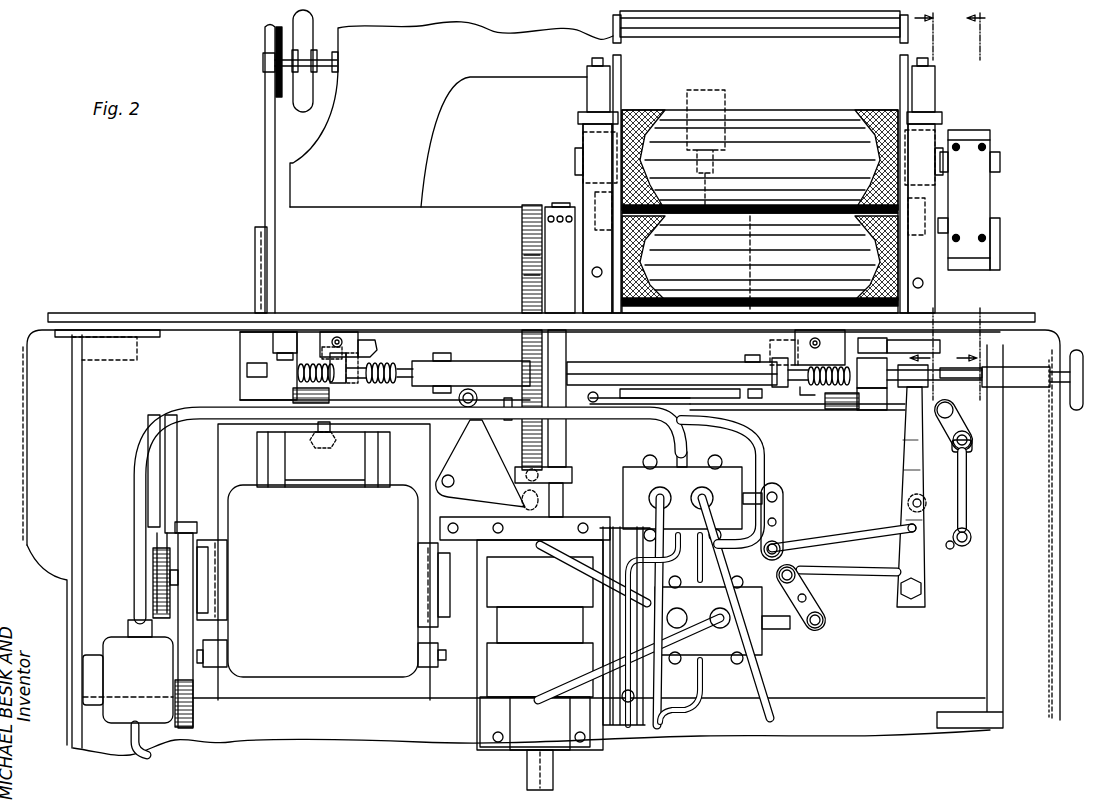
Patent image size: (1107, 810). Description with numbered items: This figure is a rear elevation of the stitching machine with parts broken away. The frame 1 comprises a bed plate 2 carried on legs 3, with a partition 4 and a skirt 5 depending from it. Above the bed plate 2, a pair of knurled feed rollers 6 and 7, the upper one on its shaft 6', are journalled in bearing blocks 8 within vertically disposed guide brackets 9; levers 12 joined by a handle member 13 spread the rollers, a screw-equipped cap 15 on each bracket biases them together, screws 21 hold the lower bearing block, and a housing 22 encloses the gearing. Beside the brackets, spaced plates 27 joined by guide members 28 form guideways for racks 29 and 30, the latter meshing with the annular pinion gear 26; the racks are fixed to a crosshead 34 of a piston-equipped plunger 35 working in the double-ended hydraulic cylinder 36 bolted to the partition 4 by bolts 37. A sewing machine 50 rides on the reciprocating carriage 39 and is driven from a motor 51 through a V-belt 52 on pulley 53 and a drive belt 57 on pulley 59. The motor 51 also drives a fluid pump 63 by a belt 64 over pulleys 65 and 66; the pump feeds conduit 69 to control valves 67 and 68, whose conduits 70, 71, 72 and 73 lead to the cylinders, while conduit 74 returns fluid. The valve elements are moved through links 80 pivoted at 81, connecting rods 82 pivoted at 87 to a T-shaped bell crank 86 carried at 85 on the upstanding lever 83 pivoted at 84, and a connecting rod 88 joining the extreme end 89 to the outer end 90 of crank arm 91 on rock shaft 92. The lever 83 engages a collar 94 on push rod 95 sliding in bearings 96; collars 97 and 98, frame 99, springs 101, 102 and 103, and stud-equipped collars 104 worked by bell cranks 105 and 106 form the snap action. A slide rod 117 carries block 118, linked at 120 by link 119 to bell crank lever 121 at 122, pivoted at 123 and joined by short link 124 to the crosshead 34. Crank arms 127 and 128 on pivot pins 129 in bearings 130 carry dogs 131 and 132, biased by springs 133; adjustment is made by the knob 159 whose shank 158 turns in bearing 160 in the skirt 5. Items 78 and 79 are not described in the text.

The frame 1 is at (24, 326).
The bed plate 2 is at (178, 313).
The legs 3 is at (72, 405).
The partition 4 is at (353, 693).
The skirt 5 is at (25, 375).
The feed roller 6 is at (760, 151).
The shaft 6' is at (982, 160).
The feed roller 7 is at (788, 268).
The bearing blocks 8 is at (578, 143).
The guide brackets 9 is at (583, 182).
The levers 12 is at (621, 40).
The handle member 13 is at (790, 28).
The cap 15 is at (586, 98).
The screws 21 is at (760, 286).
The housing 22 is at (990, 197).
The annular pinion gear 26 is at (522, 263).
The plates 27 is at (522, 240).
The guide members 28 is at (570, 265).
The rack 29 is at (566, 342).
The rack 30 is at (522, 341).
The crosshead 34 is at (552, 469).
The piston-equipped plunger 35 is at (565, 497).
The double-ended hydraulic cylinder 36 is at (545, 631).
The bolts 37 is at (483, 521).
The reciprocating carriage 39 is at (392, 258).
The sewing machine 50 is at (497, 56).
The motor 51 is at (338, 576).
The V-belt 52 is at (167, 478).
The pulley 53 is at (153, 567).
The drive belt 57 is at (266, 128).
The pulley 59 is at (265, 40).
The fluid pump 63 is at (143, 680).
The belt 64 is at (185, 628).
The pulley 65 is at (196, 538).
The pulley 66 is at (195, 713).
The control valve 67 is at (698, 488).
The control valve 68 is at (710, 609).
The conduit 69 is at (134, 475).
The conduit 70 is at (657, 730).
The conduit 71 is at (772, 685).
The conduit 72 is at (578, 568).
The conduit 73 is at (577, 682).
The conduit 74 is at (640, 546).
The link 78 is at (758, 492).
The arm 79 is at (782, 622).
The centrally pivoted links 80 is at (778, 525).
The pivot 81 is at (780, 500).
The connecting rods 82 is at (838, 562).
The upstanding lever 83 is at (903, 470).
The pivot 84 is at (905, 600).
The pivot 85 is at (906, 530).
The T-shaped bell crank 86 is at (952, 549).
The pivots 87 is at (925, 500).
The connecting rod 88 is at (968, 466).
The extreme end 89 is at (972, 536).
The outer end 90 is at (960, 450).
The crank arm 91 is at (970, 437).
The rock shaft 92 is at (953, 408).
The collar 94 is at (902, 388).
The push rod 95 is at (263, 373).
The bearings 96 is at (283, 352).
The collar 97 is at (776, 388).
The collar 98 is at (352, 378).
The rectangular open-sided frame 99 is at (632, 364).
The coil compression spring 101 is at (746, 358).
The coil compression spring 102 is at (382, 368).
The cushioning springs 103 is at (300, 372).
The stud-equipped collar 104 is at (458, 349).
The bell crank 105 is at (745, 409).
The bell crank 106 is at (440, 356).
The slide rod 117 is at (632, 413).
The block 118 is at (618, 398).
The link 119 is at (508, 402).
The pivot 120 is at (596, 386).
The bell crank lever 121 is at (465, 452).
The pivot 122 is at (461, 404).
The pivot 123 is at (442, 483).
The short link 124 is at (530, 510).
The bifurcated crank arm 127 is at (808, 390).
The bifurcated crank arm 128 is at (322, 345).
The pivot pins 129 is at (342, 338).
The bearings 130 is at (337, 337).
The dog 131 is at (775, 350).
The dog 132 is at (364, 340).
The coil extension springs 133 is at (310, 405).
The extended shank 158 is at (1022, 372).
The adjusting knob 159 is at (1076, 350).
The bearing 160 is at (1050, 392).